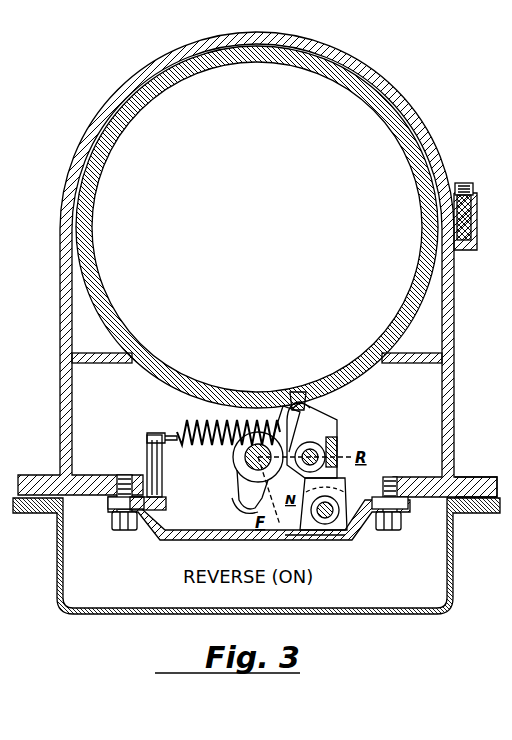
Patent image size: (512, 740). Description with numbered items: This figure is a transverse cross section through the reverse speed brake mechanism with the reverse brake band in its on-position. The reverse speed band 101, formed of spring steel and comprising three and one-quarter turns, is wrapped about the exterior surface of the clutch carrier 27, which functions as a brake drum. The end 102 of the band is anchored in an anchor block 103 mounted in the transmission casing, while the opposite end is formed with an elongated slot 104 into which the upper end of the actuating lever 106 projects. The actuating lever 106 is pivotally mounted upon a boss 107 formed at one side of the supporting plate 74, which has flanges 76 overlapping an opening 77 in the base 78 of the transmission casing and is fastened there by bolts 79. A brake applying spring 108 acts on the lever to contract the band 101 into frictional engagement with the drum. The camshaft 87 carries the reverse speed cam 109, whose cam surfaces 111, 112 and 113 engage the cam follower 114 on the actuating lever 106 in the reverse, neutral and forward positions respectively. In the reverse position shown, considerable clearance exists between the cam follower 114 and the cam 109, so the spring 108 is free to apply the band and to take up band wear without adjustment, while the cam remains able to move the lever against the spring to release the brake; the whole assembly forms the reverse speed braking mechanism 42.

The clutch carrier 27 is at (412, 290).
The brake actuating mechanism 42 is at (346, 549).
The supporting plate 74 is at (186, 541).
The flanges 76 is at (406, 505).
The opening 77 is at (392, 478).
The base 78 is at (462, 478).
The bolts 79 is at (396, 531).
The camshaft 87 is at (247, 466).
The reverse speed band 101 is at (383, 335).
The end of the band 102 is at (468, 258).
The anchor block 103 is at (458, 183).
The elongated slot 104 is at (298, 400).
The actuating lever 106 is at (318, 436).
The boss 107 is at (338, 536).
The brake applying spring 108 is at (200, 428).
The reverse speed cam 109 is at (246, 482).
The cam surface 111 is at (333, 470).
The cam surface 112 is at (290, 466).
The cam surface 113 is at (246, 514).
The cam follower 114 is at (337, 452).